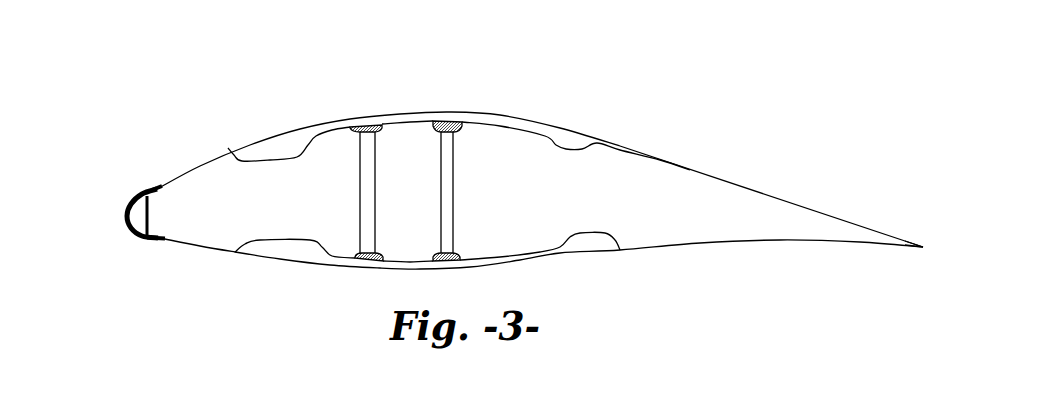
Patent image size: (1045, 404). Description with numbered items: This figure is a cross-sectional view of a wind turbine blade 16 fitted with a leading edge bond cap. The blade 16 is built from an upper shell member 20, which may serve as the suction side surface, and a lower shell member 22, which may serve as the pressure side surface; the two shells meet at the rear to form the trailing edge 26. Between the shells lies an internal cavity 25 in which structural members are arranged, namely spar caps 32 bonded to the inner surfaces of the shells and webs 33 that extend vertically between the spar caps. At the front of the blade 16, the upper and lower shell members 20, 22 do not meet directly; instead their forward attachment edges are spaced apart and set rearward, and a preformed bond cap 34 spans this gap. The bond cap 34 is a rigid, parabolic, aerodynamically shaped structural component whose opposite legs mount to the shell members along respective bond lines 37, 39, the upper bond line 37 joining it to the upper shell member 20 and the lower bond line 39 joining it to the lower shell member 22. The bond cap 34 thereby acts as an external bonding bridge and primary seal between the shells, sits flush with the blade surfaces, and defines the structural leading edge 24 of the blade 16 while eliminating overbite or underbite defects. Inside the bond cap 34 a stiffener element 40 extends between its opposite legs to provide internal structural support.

The wind turbine blade 16 is at (594, 73).
The upper shell member 20 is at (410, 114).
The lower shell member 22 is at (362, 265).
The leading edge 24 is at (120, 224).
The internal cavity 25 is at (627, 172).
The trailing edge 26 is at (917, 258).
The spar cap 32 is at (518, 128).
The web 33 is at (363, 192).
The bond cap 34 is at (127, 215).
The bond line 37 is at (153, 185).
The bond line 39 is at (158, 240).
The stiffener element 40 is at (150, 213).